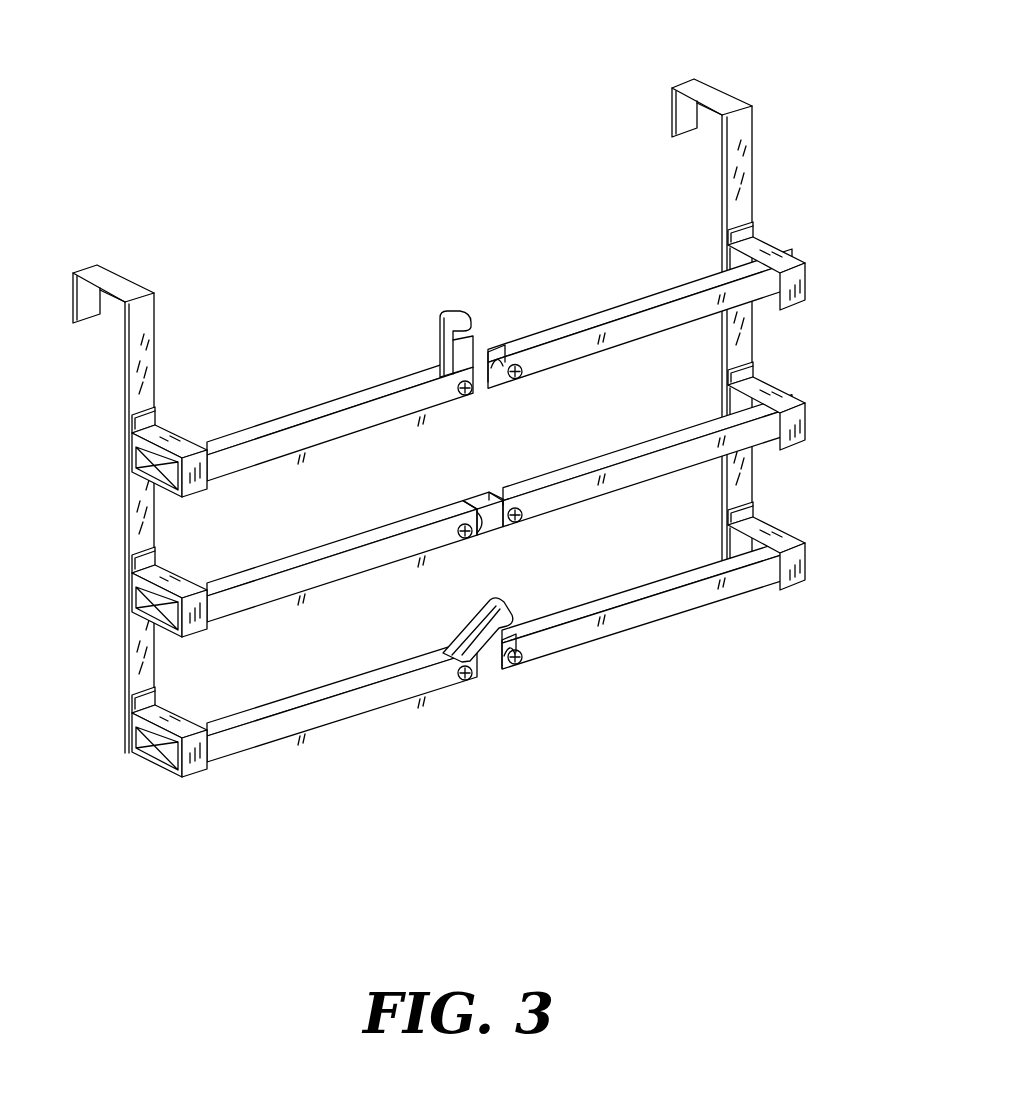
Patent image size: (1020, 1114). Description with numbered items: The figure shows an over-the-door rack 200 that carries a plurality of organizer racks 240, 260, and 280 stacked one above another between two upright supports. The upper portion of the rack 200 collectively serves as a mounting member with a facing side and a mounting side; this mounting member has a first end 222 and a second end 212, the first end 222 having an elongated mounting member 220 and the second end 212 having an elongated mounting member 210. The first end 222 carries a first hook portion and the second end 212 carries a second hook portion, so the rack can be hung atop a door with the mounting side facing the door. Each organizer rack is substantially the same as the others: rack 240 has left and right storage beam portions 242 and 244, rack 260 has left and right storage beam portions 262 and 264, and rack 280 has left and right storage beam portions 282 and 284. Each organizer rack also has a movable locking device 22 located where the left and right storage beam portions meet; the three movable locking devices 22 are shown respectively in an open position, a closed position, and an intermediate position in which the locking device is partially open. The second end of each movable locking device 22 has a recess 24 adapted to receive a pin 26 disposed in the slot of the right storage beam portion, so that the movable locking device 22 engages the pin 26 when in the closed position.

The rack 200 is at (305, 90).
The elongated mounting member 210 is at (743, 130).
The second end 212 is at (700, 84).
The elongated mounting member 220 is at (148, 317).
The first end 222 is at (103, 268).
The movable locking device 22 is at (438, 334).
The recess 24 is at (474, 321).
The pin 26 is at (494, 355).
The organizer rack 240 is at (312, 454).
The left storage beam portion 242 is at (223, 465).
The right storage beam portion 244 is at (637, 347).
The organizer rack 260 is at (312, 594).
The left storage beam portion 262 is at (223, 605).
The right storage beam portion 264 is at (636, 487).
The organizer rack 280 is at (312, 734).
The left storage beam portion 282 is at (223, 745).
The right storage beam portion 284 is at (632, 620).